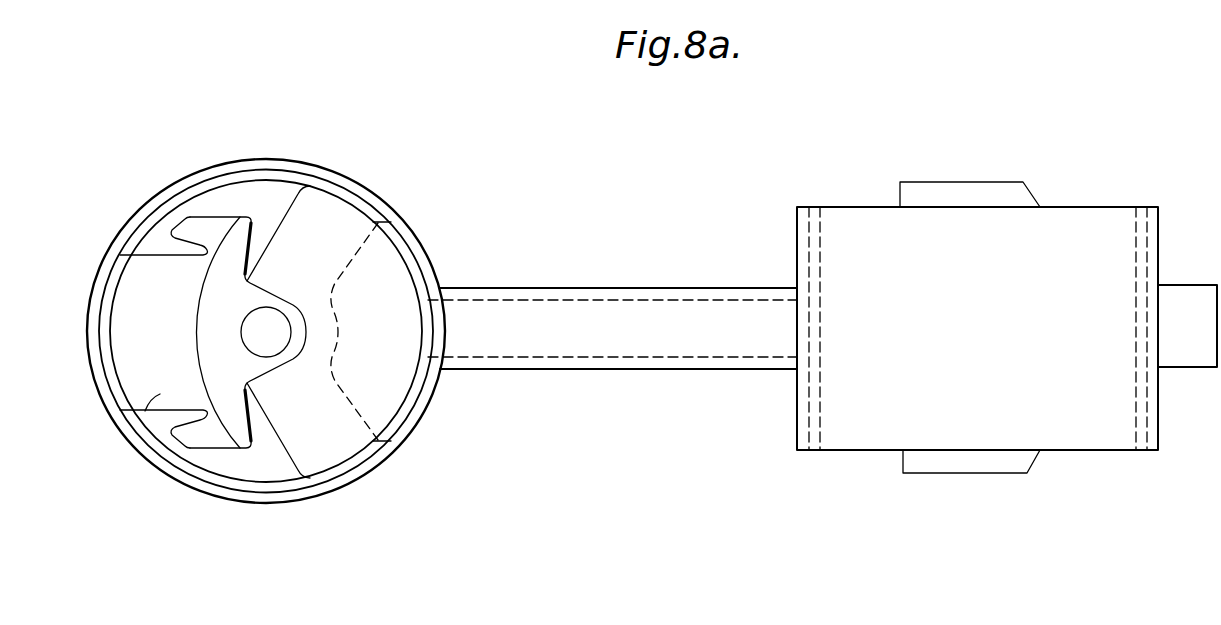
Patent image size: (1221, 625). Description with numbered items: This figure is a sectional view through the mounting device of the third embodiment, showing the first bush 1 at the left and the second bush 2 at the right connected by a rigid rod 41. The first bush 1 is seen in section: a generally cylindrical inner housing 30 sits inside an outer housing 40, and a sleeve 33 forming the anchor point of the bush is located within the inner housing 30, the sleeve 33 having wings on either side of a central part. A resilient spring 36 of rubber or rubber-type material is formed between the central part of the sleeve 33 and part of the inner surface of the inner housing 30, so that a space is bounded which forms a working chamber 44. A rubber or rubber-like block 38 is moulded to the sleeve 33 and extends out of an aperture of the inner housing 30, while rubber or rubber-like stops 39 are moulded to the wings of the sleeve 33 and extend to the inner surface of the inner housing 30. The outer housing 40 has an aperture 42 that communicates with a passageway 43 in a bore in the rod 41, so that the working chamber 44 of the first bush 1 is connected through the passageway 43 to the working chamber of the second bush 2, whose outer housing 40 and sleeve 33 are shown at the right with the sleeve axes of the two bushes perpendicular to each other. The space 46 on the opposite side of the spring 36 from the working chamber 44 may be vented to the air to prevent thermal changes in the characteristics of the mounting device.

The first bush 1 is at (346, 156).
The second bush 2 is at (945, 158).
The inner housing 30 is at (198, 473).
The sleeve 33 is at (204, 294).
The resilient spring 36 is at (343, 447).
The rubber block 38 is at (145, 411).
The stops 39 is at (184, 226).
The outer housing 40 is at (196, 177).
The rigid rod 41 is at (626, 288).
The aperture 42 is at (437, 313).
The passageway 43 is at (642, 348).
The working chamber 44 is at (399, 354).
The space 46 is at (259, 474).